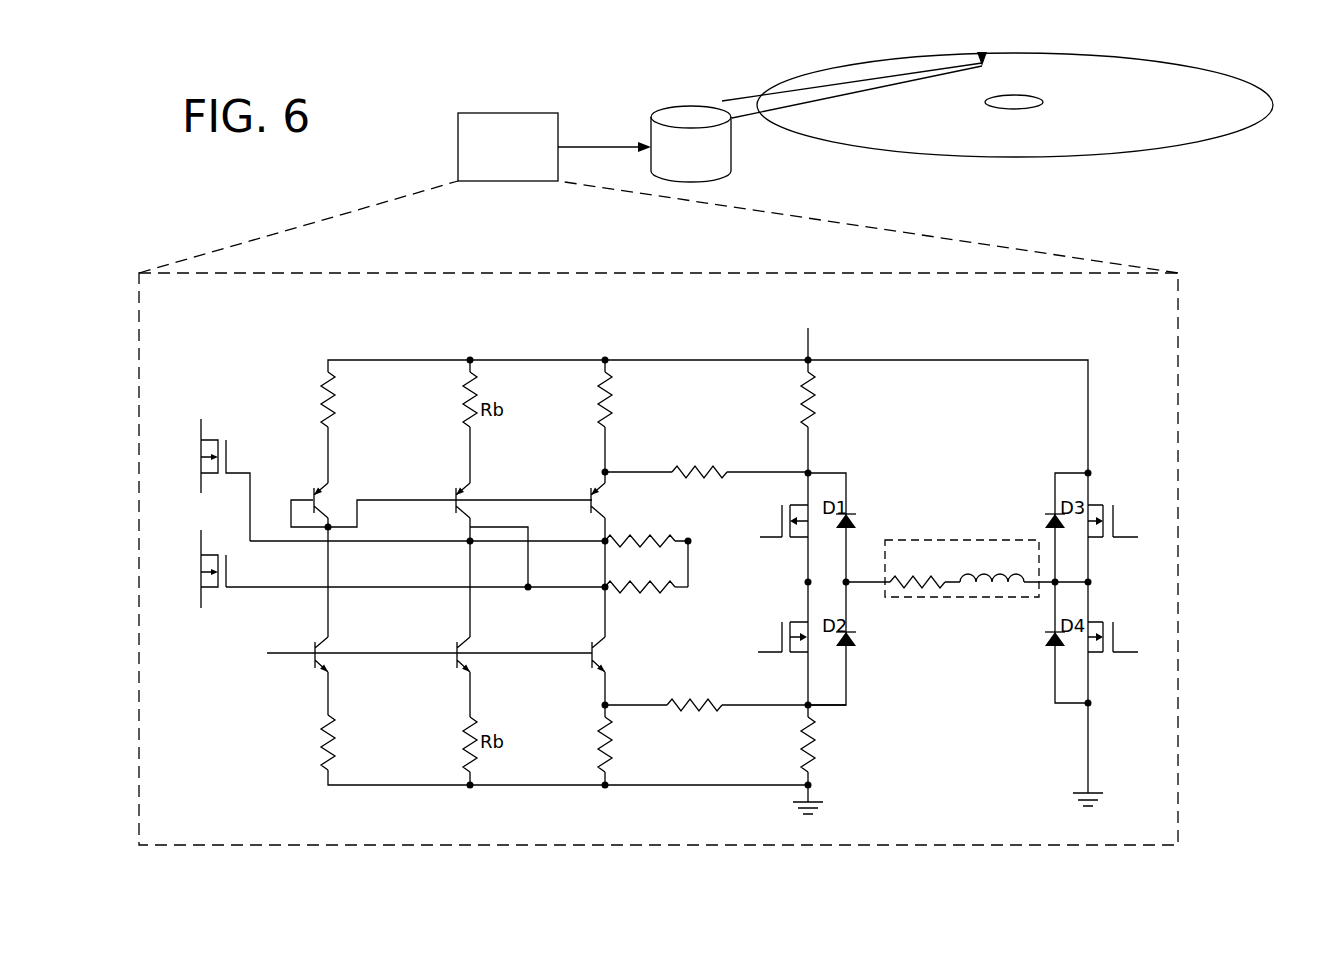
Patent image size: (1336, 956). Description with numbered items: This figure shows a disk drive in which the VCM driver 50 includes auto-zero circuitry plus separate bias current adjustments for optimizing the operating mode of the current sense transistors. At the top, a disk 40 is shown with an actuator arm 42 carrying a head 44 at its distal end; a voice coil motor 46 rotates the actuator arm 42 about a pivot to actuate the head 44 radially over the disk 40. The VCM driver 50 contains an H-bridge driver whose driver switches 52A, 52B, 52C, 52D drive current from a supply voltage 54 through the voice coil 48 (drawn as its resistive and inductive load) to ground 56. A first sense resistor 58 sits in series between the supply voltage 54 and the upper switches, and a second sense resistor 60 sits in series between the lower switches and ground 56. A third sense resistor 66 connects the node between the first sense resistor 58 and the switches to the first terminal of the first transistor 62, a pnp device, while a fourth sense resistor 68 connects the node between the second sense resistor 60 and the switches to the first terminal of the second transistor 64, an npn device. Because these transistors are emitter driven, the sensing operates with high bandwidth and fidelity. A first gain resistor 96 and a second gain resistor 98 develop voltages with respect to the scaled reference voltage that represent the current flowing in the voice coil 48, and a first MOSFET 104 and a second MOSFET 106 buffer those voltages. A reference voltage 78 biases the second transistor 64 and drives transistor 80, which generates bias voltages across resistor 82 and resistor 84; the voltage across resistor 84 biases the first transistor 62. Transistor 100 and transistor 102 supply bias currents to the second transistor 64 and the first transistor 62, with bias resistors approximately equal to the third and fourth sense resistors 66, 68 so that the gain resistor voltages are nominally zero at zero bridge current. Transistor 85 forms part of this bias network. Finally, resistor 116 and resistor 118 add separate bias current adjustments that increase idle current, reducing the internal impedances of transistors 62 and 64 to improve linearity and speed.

The disk 40 is at (1238, 78).
The actuator arm 42 is at (737, 100).
The head 44 is at (982, 53).
The voice coil motor 46 is at (688, 106).
The voice coil 48 is at (958, 538).
The VCM driver 50 is at (507, 112).
The driver switch 52A is at (773, 522).
The driver switch 52B is at (773, 640).
The driver switch 52C is at (1124, 522).
The driver switch 52D is at (1124, 635).
The supply voltage 54 is at (812, 336).
The ground 56 is at (1088, 750).
The first sense resistor Rsensep 58 is at (820, 400).
The second sense resistor Rsensem 60 is at (820, 752).
The first transistor 62 is at (587, 484).
The second transistor 64 is at (589, 631).
The third sense resistor Rsp 66 is at (697, 461).
The fourth sense resistor Rsm 68 is at (695, 714).
The reference voltage vRef 78 is at (267, 657).
The transistor 80 is at (314, 631).
The resistor 82 is at (316, 742).
The resistor 84 is at (316, 402).
The transistor 85 is at (312, 484).
The first gain resistor Rgp 96 is at (638, 548).
The second gain resistor Rgm 98 is at (638, 579).
The transistor 100 is at (451, 484).
The transistor 102 is at (451, 631).
The first MOSFET 104 is at (191, 457).
The second MOSFET 106 is at (193, 572).
The resistor 116 is at (595, 403).
The resistor 118 is at (596, 742).